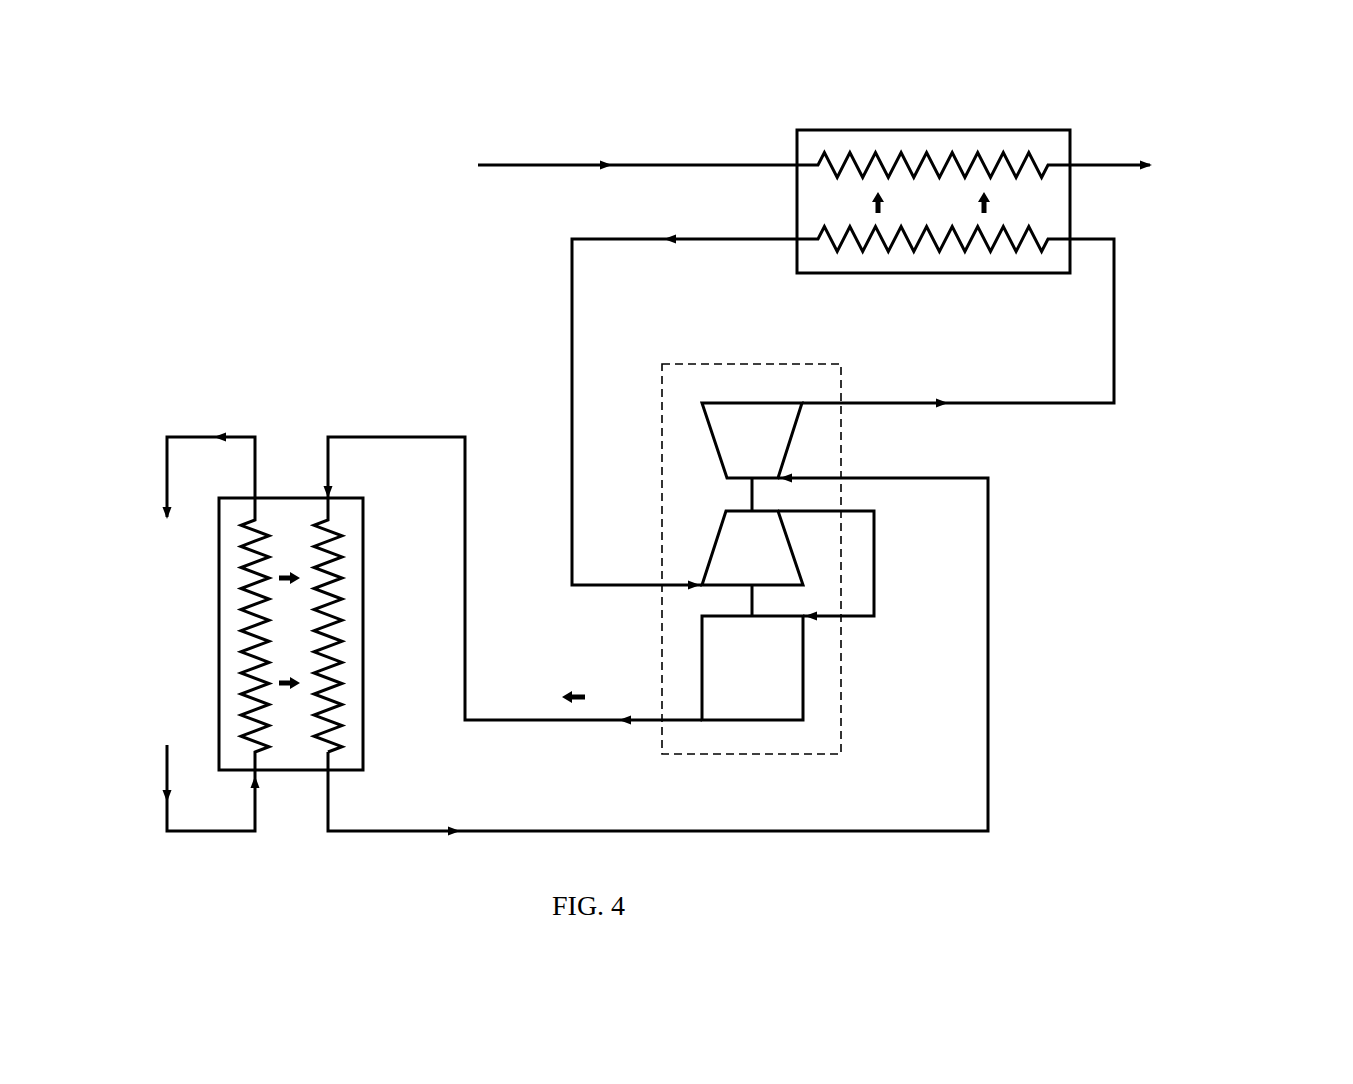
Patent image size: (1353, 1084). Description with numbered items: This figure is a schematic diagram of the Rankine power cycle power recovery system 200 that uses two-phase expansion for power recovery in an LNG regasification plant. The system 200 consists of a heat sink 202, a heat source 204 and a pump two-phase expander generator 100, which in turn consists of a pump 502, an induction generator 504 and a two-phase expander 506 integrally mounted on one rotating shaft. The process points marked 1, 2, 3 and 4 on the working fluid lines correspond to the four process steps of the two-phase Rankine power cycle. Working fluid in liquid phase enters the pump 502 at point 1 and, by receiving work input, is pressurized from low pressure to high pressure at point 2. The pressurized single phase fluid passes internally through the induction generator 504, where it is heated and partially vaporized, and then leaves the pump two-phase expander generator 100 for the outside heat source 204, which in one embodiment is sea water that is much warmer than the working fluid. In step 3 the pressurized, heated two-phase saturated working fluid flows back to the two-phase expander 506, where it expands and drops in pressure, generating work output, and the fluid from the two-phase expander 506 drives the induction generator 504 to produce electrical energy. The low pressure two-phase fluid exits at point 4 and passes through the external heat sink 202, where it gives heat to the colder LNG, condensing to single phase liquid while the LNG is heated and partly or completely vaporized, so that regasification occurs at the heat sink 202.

The Rankine power cycle power recovery system 200 is at (282, 208).
The heat sink 202 is at (931, 129).
The heat source 204 is at (364, 574).
The pump two-phase expander generator 100 is at (770, 755).
The two-phase expander 506 is at (796, 428).
The pump 502 is at (796, 558).
The induction generator 504 is at (804, 671).
The working fluid state point 1 (pump inlet) 1 is at (684, 395).
The working fluid state point 2 (pump outlet) 2 is at (838, 562).
The step 3 is at (658, 640).
The working fluid state point 4 (turbine outlet) 4 is at (958, 323).